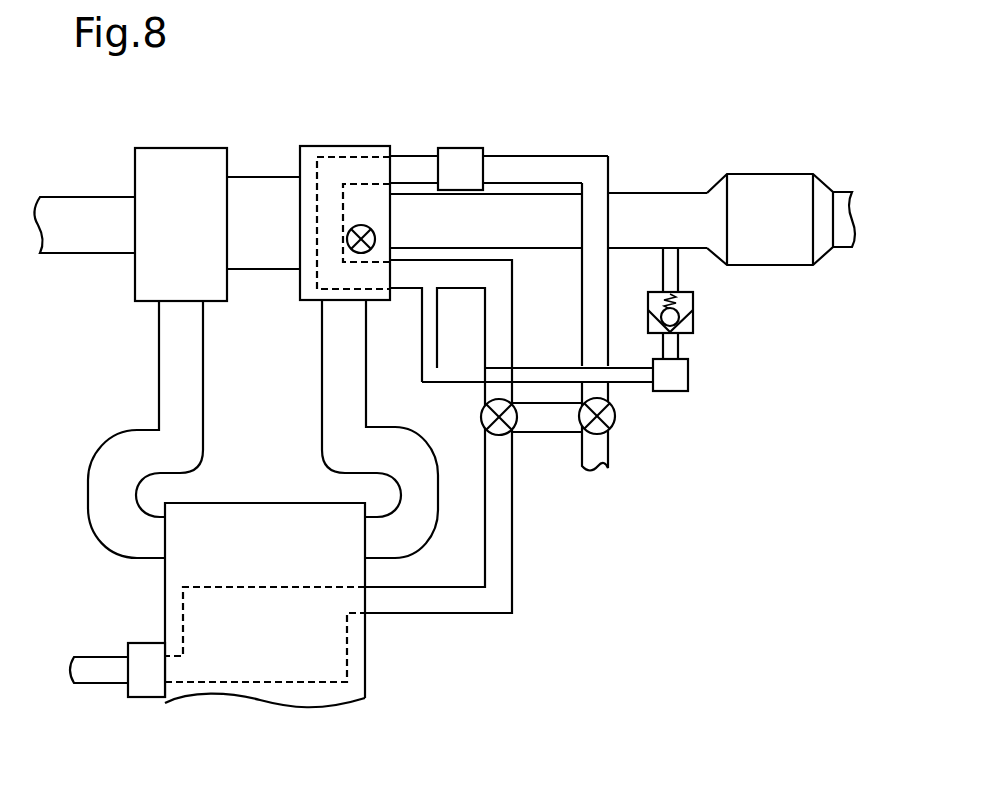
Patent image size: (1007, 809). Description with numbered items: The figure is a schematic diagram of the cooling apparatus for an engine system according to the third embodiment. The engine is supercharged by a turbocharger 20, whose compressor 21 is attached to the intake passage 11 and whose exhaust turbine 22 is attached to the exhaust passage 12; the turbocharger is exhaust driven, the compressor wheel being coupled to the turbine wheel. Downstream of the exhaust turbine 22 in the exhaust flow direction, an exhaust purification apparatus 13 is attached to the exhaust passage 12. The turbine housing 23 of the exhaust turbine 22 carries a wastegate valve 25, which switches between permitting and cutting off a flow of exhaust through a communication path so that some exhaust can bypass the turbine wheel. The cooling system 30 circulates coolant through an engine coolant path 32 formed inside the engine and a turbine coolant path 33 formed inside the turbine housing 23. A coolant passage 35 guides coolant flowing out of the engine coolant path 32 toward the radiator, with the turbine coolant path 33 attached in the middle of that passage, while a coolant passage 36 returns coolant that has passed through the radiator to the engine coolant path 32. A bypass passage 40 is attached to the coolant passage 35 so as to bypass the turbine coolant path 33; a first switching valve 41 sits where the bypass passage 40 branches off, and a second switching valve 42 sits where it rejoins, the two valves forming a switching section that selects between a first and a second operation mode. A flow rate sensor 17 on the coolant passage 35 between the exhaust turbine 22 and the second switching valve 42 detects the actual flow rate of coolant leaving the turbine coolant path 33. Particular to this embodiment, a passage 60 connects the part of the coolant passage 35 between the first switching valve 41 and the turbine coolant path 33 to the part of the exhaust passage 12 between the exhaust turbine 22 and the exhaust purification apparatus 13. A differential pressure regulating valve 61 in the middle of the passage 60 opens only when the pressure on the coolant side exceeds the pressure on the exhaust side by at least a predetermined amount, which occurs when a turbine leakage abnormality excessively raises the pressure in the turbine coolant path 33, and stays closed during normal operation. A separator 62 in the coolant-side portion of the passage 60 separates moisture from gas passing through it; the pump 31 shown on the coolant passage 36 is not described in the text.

The intake passage 11 is at (88, 197).
The exhaust passage 12 is at (638, 193).
The exhaust purification apparatus 13 is at (766, 174).
The flow rate sensor 17 is at (462, 148).
The turbocharger 20 is at (258, 124).
The compressor 21 is at (167, 148).
The exhaust turbine 22 is at (366, 223).
The turbine housing 23 is at (348, 146).
The wastegate valve 25 is at (375, 239).
The cooling system 30 is at (660, 129).
The pump 31 is at (145, 643).
The engine coolant path 32 is at (262, 587).
The turbine coolant path 33 is at (317, 204).
The coolant passage 35 is at (408, 156).
The coolant passage 36 is at (98, 657).
The bypass passage 40 is at (548, 433).
The first switching valve 41 is at (482, 426).
The second switching valve 42 is at (617, 416).
The passage 60 is at (682, 267).
The differential pressure regulating valve 61 is at (693, 312).
The separator 62 is at (689, 372).